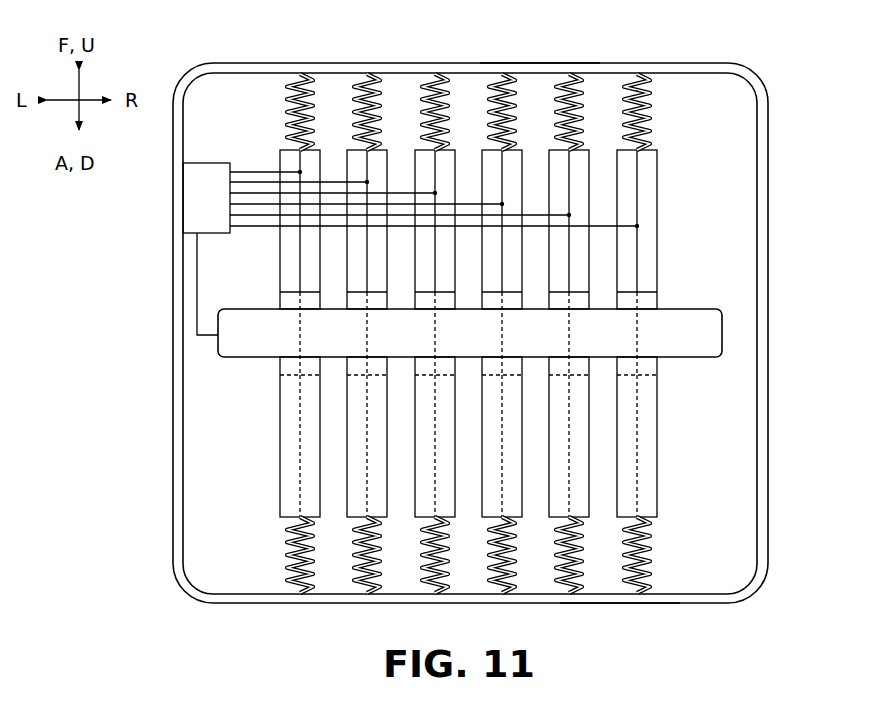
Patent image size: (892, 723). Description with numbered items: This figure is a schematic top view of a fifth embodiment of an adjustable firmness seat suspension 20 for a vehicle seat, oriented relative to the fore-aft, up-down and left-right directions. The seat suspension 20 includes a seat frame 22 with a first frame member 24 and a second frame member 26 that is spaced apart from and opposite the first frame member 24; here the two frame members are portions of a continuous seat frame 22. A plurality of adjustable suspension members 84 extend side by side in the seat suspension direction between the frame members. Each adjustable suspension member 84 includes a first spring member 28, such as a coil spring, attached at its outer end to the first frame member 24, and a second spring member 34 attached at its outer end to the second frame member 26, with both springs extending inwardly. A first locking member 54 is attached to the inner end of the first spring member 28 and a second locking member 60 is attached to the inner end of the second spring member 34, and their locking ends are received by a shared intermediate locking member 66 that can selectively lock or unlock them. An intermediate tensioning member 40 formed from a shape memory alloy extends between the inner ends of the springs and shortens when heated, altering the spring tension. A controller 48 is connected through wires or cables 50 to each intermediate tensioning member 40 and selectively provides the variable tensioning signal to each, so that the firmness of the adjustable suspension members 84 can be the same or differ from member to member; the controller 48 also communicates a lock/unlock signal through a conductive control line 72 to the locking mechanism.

The adjustable firmness seat suspension 20 is at (261, 60).
The seat frame 22 is at (459, 61).
The first frame member 24 is at (533, 64).
The second frame member 26 is at (611, 604).
The first spring member 28 is at (651, 91).
The second spring member 34 is at (649, 555).
The intermediate tensioning member 40 is at (647, 232).
The controller 48 is at (208, 161).
The wire or cable 50 is at (262, 240).
The first locking member 54 is at (661, 183).
The second locking member 60 is at (661, 470).
The intermediate locking member 66 is at (687, 306).
The conductive control line 72 is at (208, 338).
The adjustable suspension member 84 is at (318, 141).